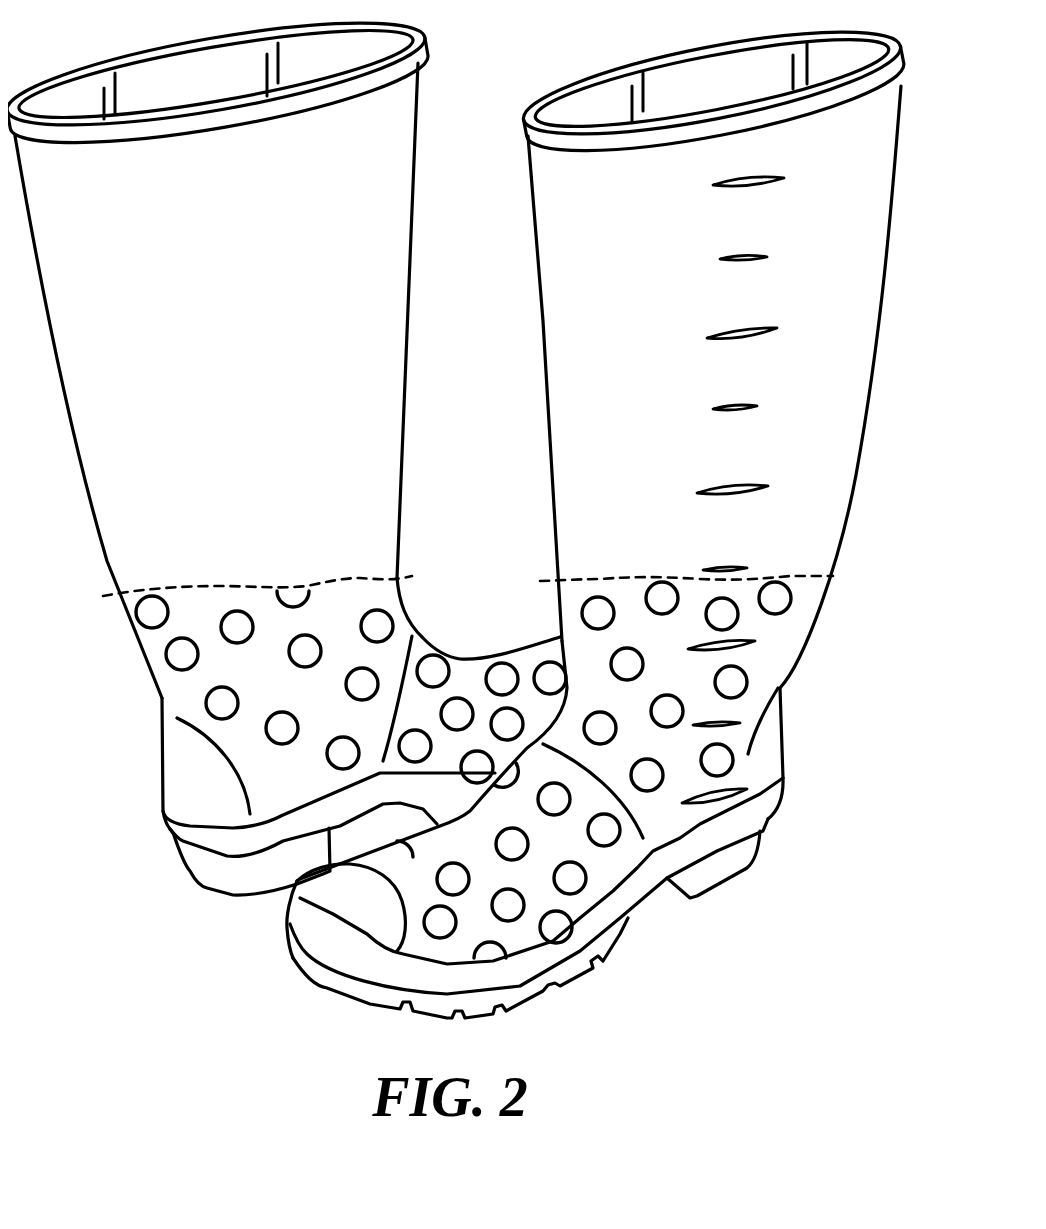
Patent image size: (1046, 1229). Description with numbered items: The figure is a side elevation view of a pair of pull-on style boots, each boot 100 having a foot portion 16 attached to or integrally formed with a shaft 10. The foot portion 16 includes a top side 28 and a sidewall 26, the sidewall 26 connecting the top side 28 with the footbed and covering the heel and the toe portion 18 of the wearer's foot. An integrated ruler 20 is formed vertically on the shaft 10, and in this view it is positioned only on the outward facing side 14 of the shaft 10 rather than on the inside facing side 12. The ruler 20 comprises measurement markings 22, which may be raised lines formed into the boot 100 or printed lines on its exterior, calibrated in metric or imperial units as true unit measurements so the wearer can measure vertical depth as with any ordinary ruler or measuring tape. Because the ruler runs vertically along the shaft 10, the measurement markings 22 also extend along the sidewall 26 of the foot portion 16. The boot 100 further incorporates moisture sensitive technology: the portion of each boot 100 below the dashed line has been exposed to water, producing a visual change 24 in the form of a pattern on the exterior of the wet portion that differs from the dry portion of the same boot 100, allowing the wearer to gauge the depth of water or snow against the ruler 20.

The boot 100 is at (198, 32).
The shaft 10 is at (541, 291).
The inside facing side of shaft 12 is at (362, 560).
The outside facing side of shaft 14 is at (650, 437).
The foot portion 16 is at (162, 740).
The toe portion 18 is at (333, 890).
The ruler 20 is at (645, 228).
The measurement marking 22 is at (757, 257).
The visual change 24 is at (133, 608).
The sidewall 26 is at (633, 877).
The top side 28 is at (475, 657).